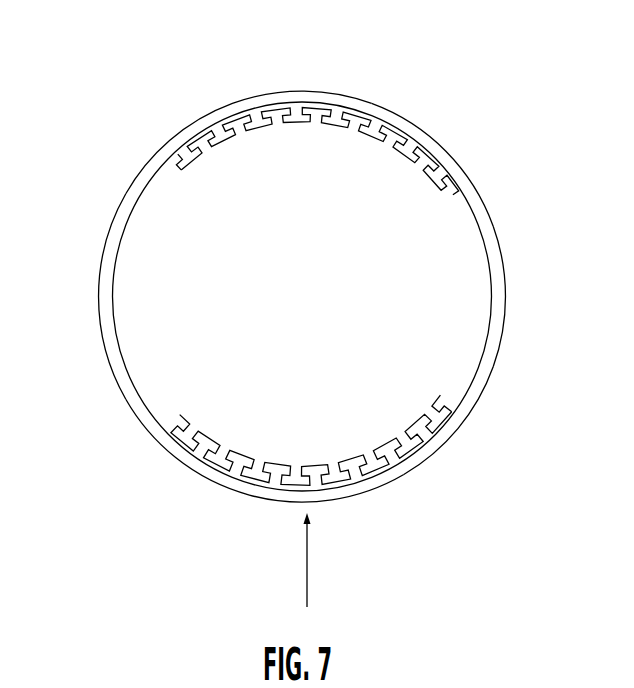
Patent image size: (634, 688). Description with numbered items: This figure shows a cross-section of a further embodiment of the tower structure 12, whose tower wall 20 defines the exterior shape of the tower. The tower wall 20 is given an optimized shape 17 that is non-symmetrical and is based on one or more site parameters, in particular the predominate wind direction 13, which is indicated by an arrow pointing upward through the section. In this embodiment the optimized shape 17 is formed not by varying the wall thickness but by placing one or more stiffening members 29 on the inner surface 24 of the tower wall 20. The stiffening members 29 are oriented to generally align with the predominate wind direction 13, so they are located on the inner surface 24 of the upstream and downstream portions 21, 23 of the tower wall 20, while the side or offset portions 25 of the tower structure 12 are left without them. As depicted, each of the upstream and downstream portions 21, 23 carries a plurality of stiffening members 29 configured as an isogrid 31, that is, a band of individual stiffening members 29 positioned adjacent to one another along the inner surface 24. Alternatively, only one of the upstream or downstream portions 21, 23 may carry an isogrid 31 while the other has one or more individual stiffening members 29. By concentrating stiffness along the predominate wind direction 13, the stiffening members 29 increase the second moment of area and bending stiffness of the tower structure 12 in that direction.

The tower structure 12 is at (97, 170).
The predominate wind direction 13 is at (307, 578).
The optimized shape 17 is at (484, 154).
The tower wall 20 is at (473, 408).
The upstream portion 21 is at (225, 505).
The downstream portion 23 is at (253, 71).
The inner surface 24 is at (128, 378).
The offset portion 25 is at (535, 355).
The stiffening member 29 is at (176, 168).
The isogrid 31 is at (258, 145).